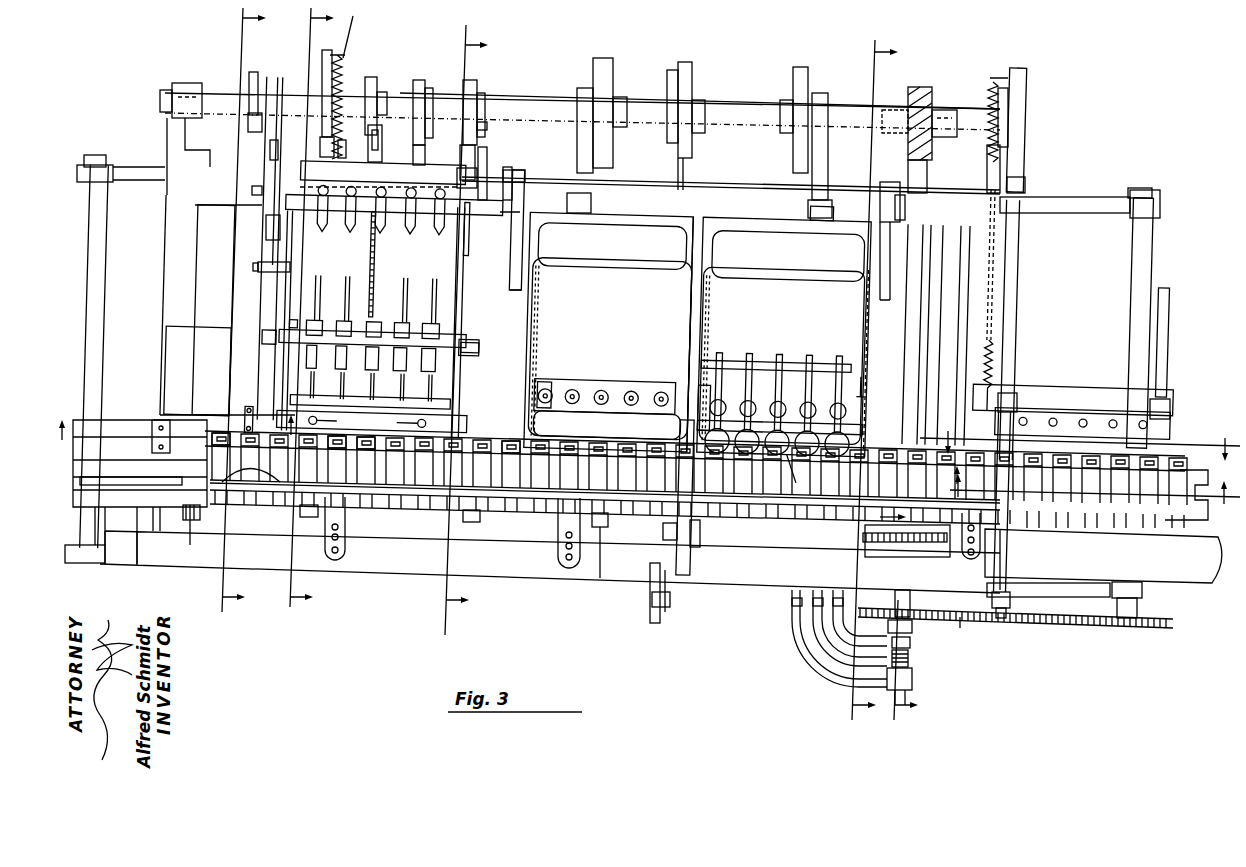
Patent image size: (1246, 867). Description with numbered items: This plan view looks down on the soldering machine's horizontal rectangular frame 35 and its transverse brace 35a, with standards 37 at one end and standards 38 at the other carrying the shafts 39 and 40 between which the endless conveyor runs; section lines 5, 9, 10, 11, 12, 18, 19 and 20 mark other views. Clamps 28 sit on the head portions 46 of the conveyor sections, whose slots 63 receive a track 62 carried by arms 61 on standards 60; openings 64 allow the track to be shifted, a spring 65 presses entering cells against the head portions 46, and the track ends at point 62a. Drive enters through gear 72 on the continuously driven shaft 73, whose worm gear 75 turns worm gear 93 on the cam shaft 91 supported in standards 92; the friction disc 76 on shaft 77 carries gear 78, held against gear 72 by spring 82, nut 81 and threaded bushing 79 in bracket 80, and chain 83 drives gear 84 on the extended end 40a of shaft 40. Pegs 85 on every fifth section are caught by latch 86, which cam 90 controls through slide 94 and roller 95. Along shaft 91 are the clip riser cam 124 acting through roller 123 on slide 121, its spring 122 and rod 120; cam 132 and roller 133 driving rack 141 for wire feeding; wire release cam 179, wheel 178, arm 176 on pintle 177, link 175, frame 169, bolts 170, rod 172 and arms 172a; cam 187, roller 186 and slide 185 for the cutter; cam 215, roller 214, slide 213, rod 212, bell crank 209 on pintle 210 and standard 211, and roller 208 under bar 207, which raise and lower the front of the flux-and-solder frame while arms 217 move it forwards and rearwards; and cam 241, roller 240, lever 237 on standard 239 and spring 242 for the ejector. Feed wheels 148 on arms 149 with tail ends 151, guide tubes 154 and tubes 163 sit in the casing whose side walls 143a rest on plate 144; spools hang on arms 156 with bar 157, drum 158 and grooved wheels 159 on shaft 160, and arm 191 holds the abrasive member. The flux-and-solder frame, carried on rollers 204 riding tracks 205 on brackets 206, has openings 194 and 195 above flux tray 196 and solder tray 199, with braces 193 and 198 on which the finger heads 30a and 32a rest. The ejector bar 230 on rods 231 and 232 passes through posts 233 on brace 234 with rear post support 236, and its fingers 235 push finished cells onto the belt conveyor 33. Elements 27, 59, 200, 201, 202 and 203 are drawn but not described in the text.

The section line 5 is at (177, 445).
The section line 9 is at (456, 330).
The section line 10 is at (859, 380).
The section line 11 is at (895, 660).
The section line 12 is at (295, 307).
The section line 18 is at (1095, 491).
The section line 19 is at (1080, 437).
The section line 20 is at (228, 310).
The housing 27 is at (105, 498).
The chain link 28 is at (338, 462).
The guide block 30a is at (547, 393).
The guide strip 32a is at (862, 382).
The discharge table 33 is at (1195, 582).
The frame wall 35 is at (175, 256).
The frame base 35a is at (502, 535).
The foot 37 is at (100, 563).
The cross beam 38 is at (1035, 597).
The upright post 39 is at (95, 345).
The upright post 40 is at (1148, 252).
The post base 40a is at (1140, 602).
The chain link 46 is at (368, 457).
The rack 59 is at (192, 520).
The valve body 60 is at (912, 680).
The bracket 61 is at (963, 552).
The rail 62 is at (395, 498).
The rail end 62a is at (977, 485).
The chain link 63 is at (515, 460).
The bolt 64 is at (340, 538).
The spring 65 is at (255, 496).
The slide 72 is at (866, 536).
The post 73 is at (915, 360).
The nut 75 is at (897, 110).
The rack bar 76 is at (886, 546).
The bracket 77 is at (910, 600).
The rack 78 is at (876, 618).
The threaded stem 79 is at (908, 663).
The pipe 80 is at (835, 662).
The nut 81 is at (910, 643).
The nut 82 is at (912, 627).
The rack support 83 is at (968, 628).
The rack 84 is at (1126, 628).
The block 85 is at (600, 528).
The bolt 86 is at (480, 516).
The cam disc 90 is at (482, 98).
The cam shaft 91 is at (520, 100).
The bearing 92 is at (940, 120).
The gear 93 is at (922, 90).
The cam 94 is at (480, 93).
The bolt 95 is at (486, 128).
The block 120 is at (322, 148).
The rod 121 is at (367, 29).
The cam disc 122 is at (369, 88).
The spring 123 is at (337, 56).
The bracket 124 is at (322, 90).
The cam 132 is at (384, 92).
The block 133 is at (357, 150).
The threaded rod 141 is at (391, 265).
The bolt 143a is at (458, 338).
The housing 144 is at (205, 330).
The block 148 is at (373, 350).
The pin 149 is at (390, 372).
The block 151 is at (402, 332).
The post 154 is at (408, 280).
The plate 156 is at (486, 172).
The post 157 is at (472, 237).
The plate 158 is at (385, 174).
The plunger 159 is at (408, 222).
The block 160 is at (284, 248).
The pin 163 is at (348, 394).
The pin 169 is at (318, 380).
The bar 170 is at (371, 421).
The shaft 172 is at (322, 335).
The bracket 172a is at (476, 354).
The bolt 175 is at (272, 262).
The housing 176 is at (262, 228).
The bolt 177 is at (252, 189).
The plate 178 is at (256, 75).
The plate 179 is at (250, 122).
The cam disc 185 is at (418, 80).
The plate 186 is at (428, 138).
The cam 187 is at (430, 92).
The plate 191 is at (246, 420).
The roller bar 193 is at (588, 393).
The housing 194 is at (615, 224).
The housing 195 is at (745, 224).
The frame 196 is at (598, 268).
The strip 198 is at (866, 392).
The frame 199 is at (760, 270).
The plate 200 is at (608, 371).
The bar 201 is at (790, 360).
The plunger 202 is at (780, 352).
The link 203 is at (808, 475).
The post 204 is at (514, 200).
The post end 205 is at (505, 292).
The plate 206 is at (870, 330).
The post 207 is at (692, 588).
The block 208 is at (700, 546).
The rod 209 is at (670, 610).
The rod 210 is at (653, 598).
The block 211 is at (654, 610).
The rod 212 is at (684, 168).
The cam disc 213 is at (688, 68).
The cam 214 is at (676, 72).
The hub 215 is at (668, 108).
The lever 217 is at (822, 168).
The bar 230 is at (1162, 426).
The post 231 is at (1166, 337).
The post 232 is at (1012, 342).
The block 233 is at (1004, 620).
The bar 234 is at (1055, 394).
The hole 235 is at (1058, 421).
The block 236 is at (1022, 181).
The plate 237 is at (1016, 88).
The post 239 is at (1000, 160).
The cap 240 is at (1000, 80).
The plate 241 is at (1010, 115).
The rod 242 is at (982, 288).